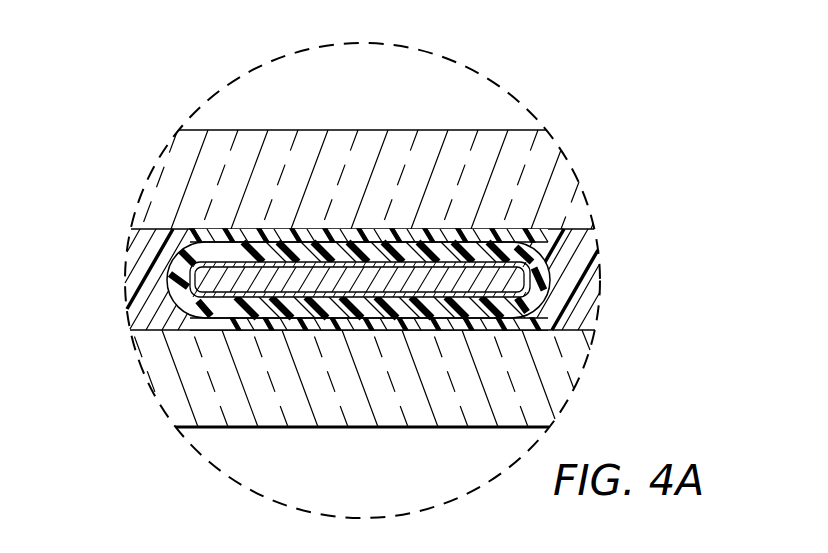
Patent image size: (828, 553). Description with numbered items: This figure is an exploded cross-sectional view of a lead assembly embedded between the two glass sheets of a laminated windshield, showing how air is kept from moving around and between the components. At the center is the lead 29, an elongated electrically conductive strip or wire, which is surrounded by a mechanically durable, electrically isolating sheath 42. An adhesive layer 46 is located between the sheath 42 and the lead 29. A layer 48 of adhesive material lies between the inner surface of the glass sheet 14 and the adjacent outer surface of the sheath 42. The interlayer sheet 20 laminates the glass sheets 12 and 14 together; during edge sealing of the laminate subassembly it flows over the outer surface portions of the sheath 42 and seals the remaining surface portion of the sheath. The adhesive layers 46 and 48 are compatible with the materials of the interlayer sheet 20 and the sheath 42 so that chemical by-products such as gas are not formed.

The glass sheet 12 is at (618, 381).
The glass sheet 14 is at (633, 173).
The interlayer sheet 20 is at (647, 292).
The lead 29 is at (423, 447).
The sheath 42 is at (347, 457).
The adhesive layer 46 is at (410, 262).
The layer of adhesive material 48 is at (294, 242).